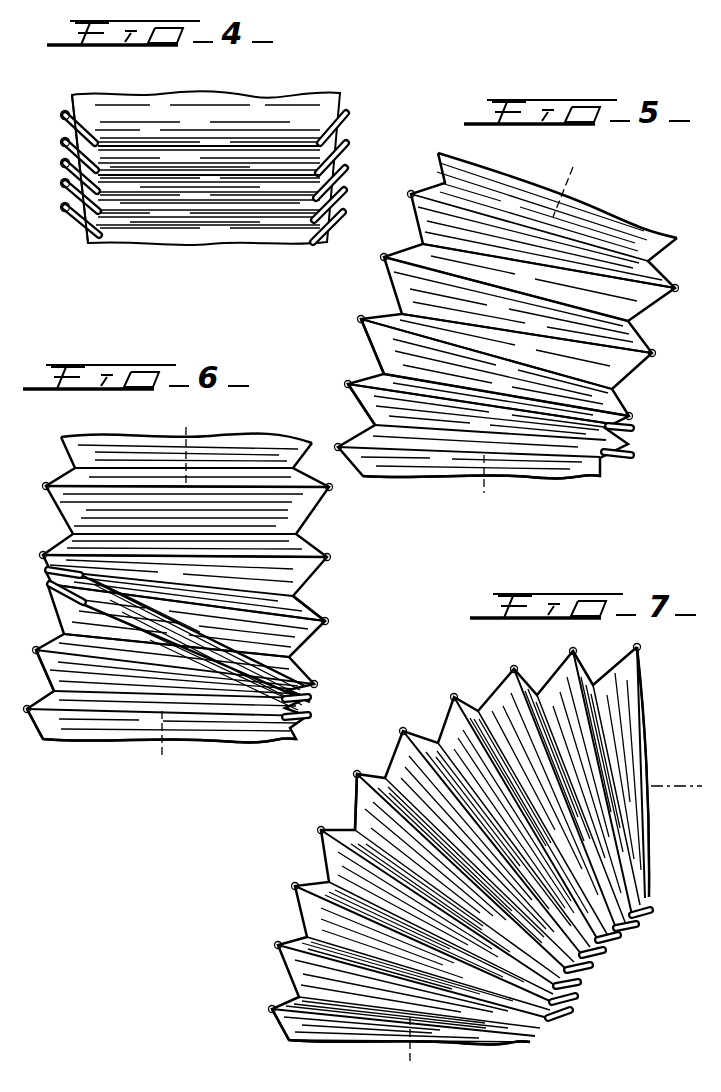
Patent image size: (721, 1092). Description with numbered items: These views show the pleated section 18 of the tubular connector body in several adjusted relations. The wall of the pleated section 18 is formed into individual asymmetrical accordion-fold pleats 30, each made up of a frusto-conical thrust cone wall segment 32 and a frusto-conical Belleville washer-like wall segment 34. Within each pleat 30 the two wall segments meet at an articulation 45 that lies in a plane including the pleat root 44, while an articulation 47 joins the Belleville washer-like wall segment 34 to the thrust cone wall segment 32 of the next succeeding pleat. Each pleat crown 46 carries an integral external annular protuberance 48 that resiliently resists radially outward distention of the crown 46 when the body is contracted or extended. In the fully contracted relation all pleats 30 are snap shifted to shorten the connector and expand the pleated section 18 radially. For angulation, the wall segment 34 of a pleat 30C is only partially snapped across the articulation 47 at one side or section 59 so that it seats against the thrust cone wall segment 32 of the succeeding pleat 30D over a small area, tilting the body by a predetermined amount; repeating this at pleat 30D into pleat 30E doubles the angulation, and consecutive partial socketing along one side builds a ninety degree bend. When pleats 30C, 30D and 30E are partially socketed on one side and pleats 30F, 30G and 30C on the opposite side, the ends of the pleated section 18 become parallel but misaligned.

In FIG. 4, the pleated section 18 is at (362, 110).
In FIG. 5, the pleated section 18 is at (361, 339).
In FIG. 6, the pleated section 18 is at (43, 439).
In FIG. 7, the pleated section 18 is at (440, 695).
In FIG. 5, the pleat 30 is at (648, 322).
In FIG. 6, the pleat 30 is at (59, 455).
In FIG. 7, the pleat 30 is at (535, 673).
In FIG. 4, the thrust cone wall segment 32 is at (248, 157).
In FIG. 5, the thrust cone wall segment 32 is at (665, 309).
In FIG. 6, the thrust cone wall segment 32 is at (80, 450).
In FIG. 7, the thrust cone wall segment 32 is at (611, 657).
In FIG. 4, the Belleville washer-like wall segment 34 is at (328, 117).
In FIG. 5, the Belleville washer-like wall segment 34 is at (669, 292).
In FIG. 6, the Belleville washer-like wall segment 34 is at (66, 475).
In FIG. 7, the Belleville washer-like wall segment 34 is at (579, 655).
In FIG. 7, the root 44 is at (637, 925).
In FIG. 4, the articulation 45 is at (165, 163).
In FIG. 5, the articulation 45 is at (573, 223).
In FIG. 6, the articulation 45 is at (139, 532).
In FIG. 7, the articulation 45 is at (553, 729).
In FIG. 6, the pleat crown 46 is at (23, 718).
In FIG. 7, the pleat crown 46 is at (272, 1017).
In FIG. 4, the articulation 47 is at (60, 220).
In FIG. 5, the articulation 47 is at (590, 261).
In FIG. 6, the articulation 47 is at (259, 607).
In FIG. 7, the articulation 47 is at (589, 751).
In FIG. 4, the annular protuberance 48 is at (63, 200).
In FIG. 5, the annular protuberance 48 is at (655, 382).
In FIG. 6, the annular protuberance 48 is at (329, 555).
In FIG. 7, the annular protuberance 48 is at (361, 774).
In FIG. 5, the side or section 59 is at (583, 432).
In FIG. 5, the pleat 30C is at (373, 367).
In FIG. 6, the pleat 30C is at (45, 616).
In FIG. 5, the pleat 30D is at (356, 423).
In FIG. 6, the pleat 30D is at (32, 666).
In FIG. 5, the pleat 30E is at (621, 474).
In FIG. 6, the pleat 30E is at (30, 741).
In FIG. 6, the pleat 30F is at (314, 596).
In FIG. 6, the pleat 30G is at (307, 657).